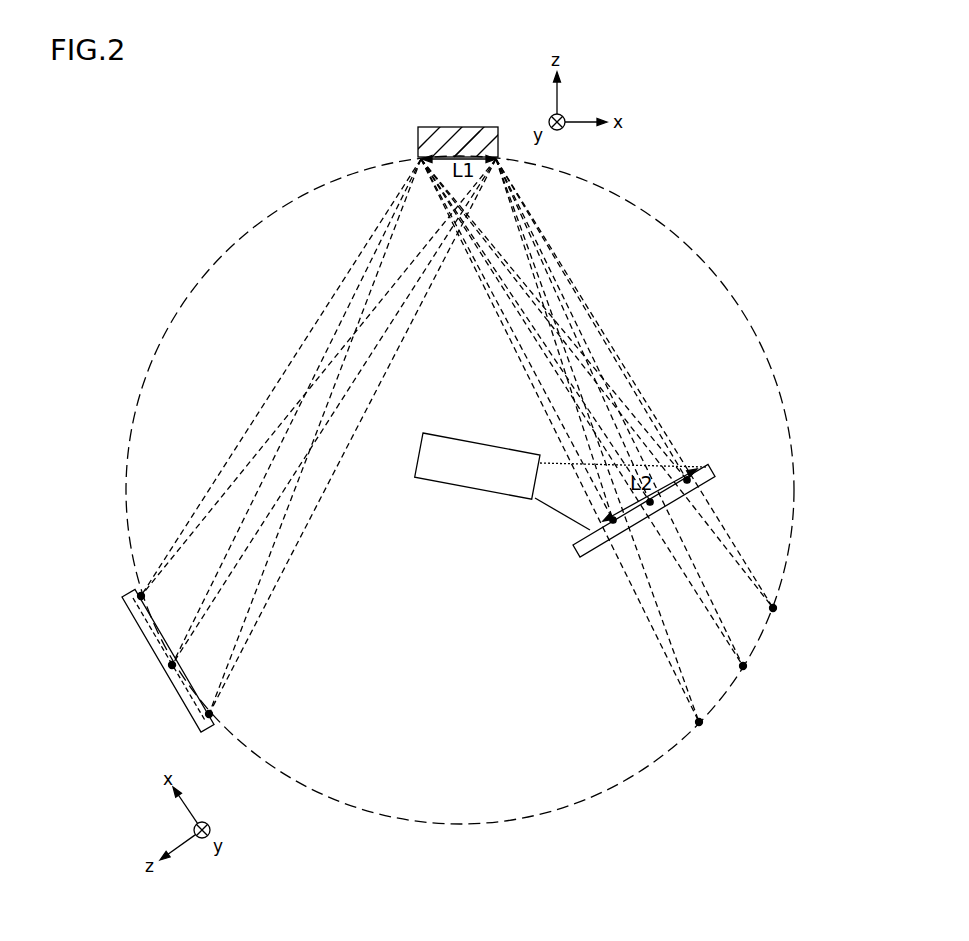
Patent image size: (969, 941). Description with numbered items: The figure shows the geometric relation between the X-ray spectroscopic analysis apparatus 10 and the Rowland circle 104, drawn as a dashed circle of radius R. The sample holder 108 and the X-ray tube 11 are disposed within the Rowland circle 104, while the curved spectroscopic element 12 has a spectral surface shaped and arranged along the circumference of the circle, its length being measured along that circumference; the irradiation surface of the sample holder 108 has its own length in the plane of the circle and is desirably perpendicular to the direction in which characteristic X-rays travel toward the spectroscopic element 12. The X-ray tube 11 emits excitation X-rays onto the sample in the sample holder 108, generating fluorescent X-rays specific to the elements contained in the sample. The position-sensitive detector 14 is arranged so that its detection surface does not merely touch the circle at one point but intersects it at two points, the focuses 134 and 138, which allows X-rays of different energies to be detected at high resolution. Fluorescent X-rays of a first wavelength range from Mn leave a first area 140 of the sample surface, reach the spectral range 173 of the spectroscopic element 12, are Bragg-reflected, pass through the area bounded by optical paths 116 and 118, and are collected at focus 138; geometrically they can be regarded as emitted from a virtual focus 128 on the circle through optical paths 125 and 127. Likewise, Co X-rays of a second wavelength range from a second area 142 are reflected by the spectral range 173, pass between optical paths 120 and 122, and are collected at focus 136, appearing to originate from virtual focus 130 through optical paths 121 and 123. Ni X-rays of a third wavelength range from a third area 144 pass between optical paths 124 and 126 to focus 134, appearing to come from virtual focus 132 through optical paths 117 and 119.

The X-ray spectroscopic analysis apparatus 10 is at (181, 194).
The X-ray tube 11 is at (481, 447).
The curved spectroscopic element 12 is at (427, 126).
The position-sensitive detector 14 is at (196, 706).
The Rowland circle 104 is at (620, 196).
The sample holder 108 is at (709, 463).
The optical path 116 is at (269, 555).
The optical path 117 is at (735, 543).
The optical path 118 is at (275, 590).
The optical path 119 is at (740, 566).
The optical path 120 is at (152, 652).
The optical path 121 is at (716, 632).
The optical path 122 is at (208, 607).
The optical path 123 is at (723, 627).
The optical path 124 is at (190, 522).
The optical path 125 is at (660, 637).
The optical path 126 is at (182, 547).
The optical path 127 is at (668, 657).
The focus 128 is at (700, 727).
The focus 130 is at (748, 670).
The focus 132 is at (778, 609).
The focus 134 is at (140, 605).
The focus 136 is at (167, 668).
The focus 138 is at (205, 727).
The first area 140 is at (620, 538).
The second area 142 is at (662, 510).
The third area 144 is at (696, 486).
The spectral range 173 is at (472, 150).